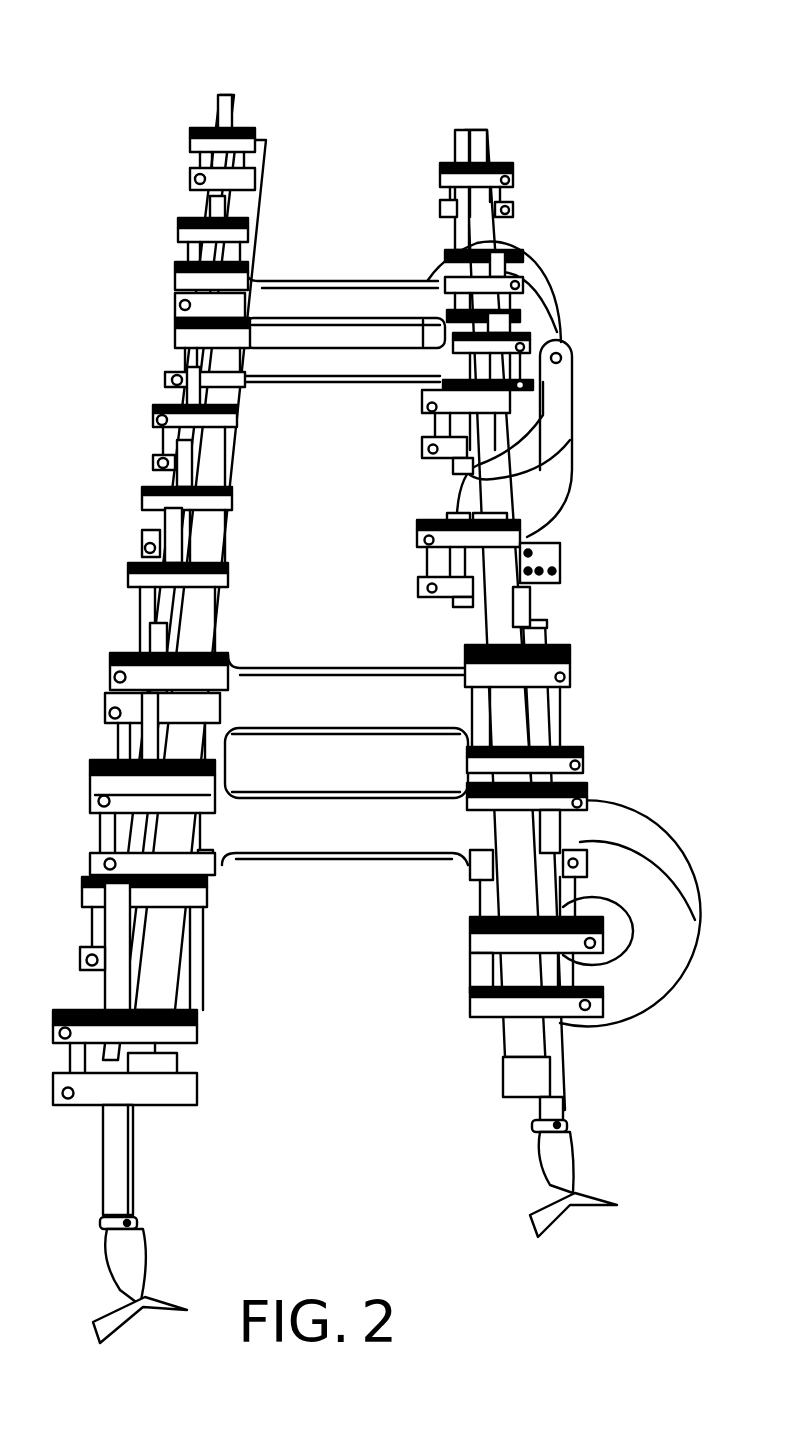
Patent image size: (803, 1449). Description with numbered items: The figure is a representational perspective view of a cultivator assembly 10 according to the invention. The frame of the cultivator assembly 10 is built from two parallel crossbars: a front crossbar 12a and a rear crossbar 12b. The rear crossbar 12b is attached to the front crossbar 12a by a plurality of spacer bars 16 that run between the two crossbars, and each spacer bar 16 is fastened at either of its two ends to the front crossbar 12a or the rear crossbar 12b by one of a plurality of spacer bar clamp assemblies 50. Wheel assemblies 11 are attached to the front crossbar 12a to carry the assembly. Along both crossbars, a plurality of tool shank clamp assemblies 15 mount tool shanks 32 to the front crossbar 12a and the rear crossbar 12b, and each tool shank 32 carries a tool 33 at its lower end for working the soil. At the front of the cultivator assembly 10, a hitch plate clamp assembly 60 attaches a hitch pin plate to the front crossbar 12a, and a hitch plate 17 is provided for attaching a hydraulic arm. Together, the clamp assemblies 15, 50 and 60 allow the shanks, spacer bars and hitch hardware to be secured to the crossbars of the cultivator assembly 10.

The cultivator assembly 10 is at (377, 677).
The wheel assembly 11 is at (627, 822).
The front crossbar 12a is at (498, 1050).
The rear crossbar 12b is at (208, 457).
The tool shank clamp assembly 15 is at (210, 996).
The spacer bar 16 is at (334, 372).
The hitch plate 17 is at (572, 357).
The tool shank 32 is at (130, 1153).
The tool 33 is at (138, 1272).
The spacer bar clamp assembly 50 is at (240, 640).
The hitch plate clamp assembly 60 is at (567, 528).